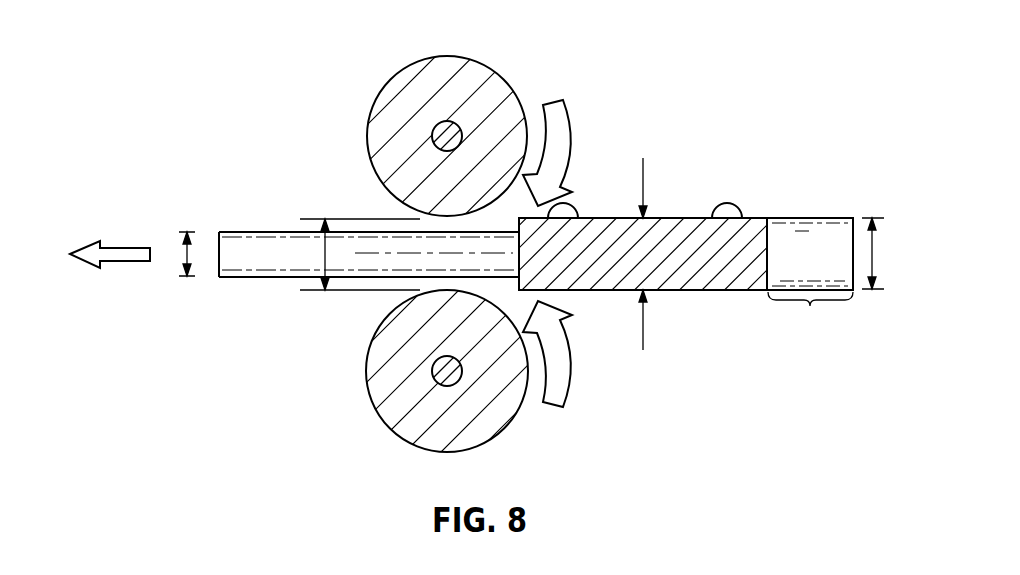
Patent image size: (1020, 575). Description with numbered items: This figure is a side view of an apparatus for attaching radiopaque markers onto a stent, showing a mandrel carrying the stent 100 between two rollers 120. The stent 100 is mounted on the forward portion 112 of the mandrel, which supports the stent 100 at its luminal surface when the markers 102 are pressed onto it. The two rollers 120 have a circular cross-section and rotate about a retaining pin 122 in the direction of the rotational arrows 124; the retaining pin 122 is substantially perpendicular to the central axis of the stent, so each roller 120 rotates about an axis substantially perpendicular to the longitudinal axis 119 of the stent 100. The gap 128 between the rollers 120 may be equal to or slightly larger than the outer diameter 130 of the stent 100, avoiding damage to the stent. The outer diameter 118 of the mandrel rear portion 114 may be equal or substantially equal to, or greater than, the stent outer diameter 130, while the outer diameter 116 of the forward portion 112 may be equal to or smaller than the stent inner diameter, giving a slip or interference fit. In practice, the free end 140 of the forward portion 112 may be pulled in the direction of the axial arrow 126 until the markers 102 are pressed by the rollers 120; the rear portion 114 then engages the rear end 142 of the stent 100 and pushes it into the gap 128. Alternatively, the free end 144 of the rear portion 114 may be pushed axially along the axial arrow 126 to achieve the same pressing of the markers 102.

The stent 100 is at (723, 292).
The markers 102 is at (577, 205).
The forward portion 112 is at (276, 287).
The rear portion 114 is at (810, 278).
The outer diameter 116 is at (185, 255).
The outer diameter 118 is at (882, 238).
The longitudinal axis 119 is at (377, 251).
The rollers 120 is at (367, 118).
The retaining pin 122 is at (432, 139).
The rotational arrows 124 is at (567, 122).
The axial arrow 126 is at (122, 246).
The gap 128 is at (322, 252).
The outer diameter 130 is at (661, 253).
The free end 140 is at (219, 260).
The rear end 142 is at (760, 303).
The free end 144 is at (856, 220).